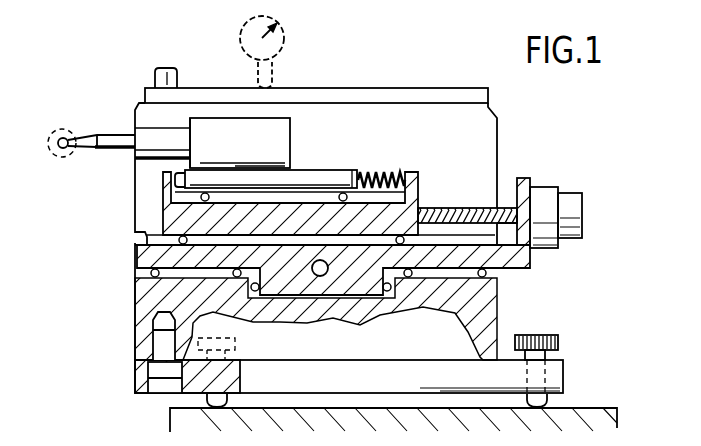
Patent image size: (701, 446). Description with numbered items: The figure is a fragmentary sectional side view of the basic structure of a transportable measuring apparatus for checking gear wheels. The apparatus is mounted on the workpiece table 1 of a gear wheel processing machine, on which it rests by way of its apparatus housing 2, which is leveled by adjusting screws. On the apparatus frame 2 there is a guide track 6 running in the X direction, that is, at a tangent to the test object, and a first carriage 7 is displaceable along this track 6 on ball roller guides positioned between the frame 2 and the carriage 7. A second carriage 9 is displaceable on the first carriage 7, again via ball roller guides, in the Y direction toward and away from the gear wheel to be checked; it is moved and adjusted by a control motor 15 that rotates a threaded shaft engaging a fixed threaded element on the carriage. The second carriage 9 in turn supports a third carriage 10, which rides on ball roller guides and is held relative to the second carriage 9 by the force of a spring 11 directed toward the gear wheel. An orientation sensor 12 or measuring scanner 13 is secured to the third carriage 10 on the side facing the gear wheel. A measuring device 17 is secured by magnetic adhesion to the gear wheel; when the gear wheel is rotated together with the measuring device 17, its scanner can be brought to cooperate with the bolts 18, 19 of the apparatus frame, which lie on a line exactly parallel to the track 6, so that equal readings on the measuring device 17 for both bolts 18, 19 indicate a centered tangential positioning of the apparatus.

The workpiece table 1 is at (578, 420).
The apparatus housing 2 is at (428, 372).
The guide track 6 is at (387, 292).
The first carriage 7 is at (135, 258).
The second carriage 9 is at (398, 213).
The third carriage 10 is at (338, 168).
The spring 11 is at (384, 168).
The orientation sensor 12 is at (68, 131).
The measuring scanner 13 is at (62, 158).
The control motor 15 is at (570, 203).
The measuring device 17 is at (284, 38).
The bolt 18 is at (127, 68).
The bolt 19 is at (157, 82).